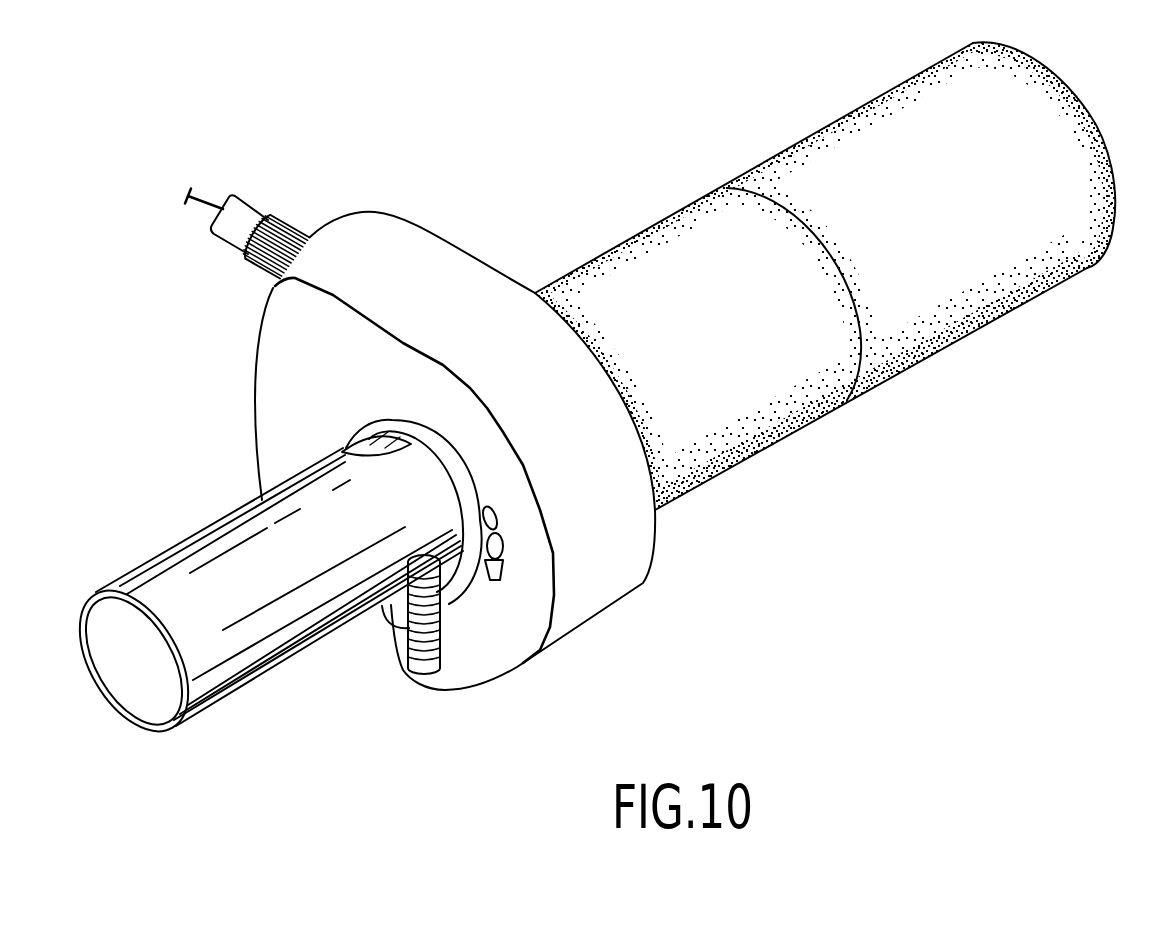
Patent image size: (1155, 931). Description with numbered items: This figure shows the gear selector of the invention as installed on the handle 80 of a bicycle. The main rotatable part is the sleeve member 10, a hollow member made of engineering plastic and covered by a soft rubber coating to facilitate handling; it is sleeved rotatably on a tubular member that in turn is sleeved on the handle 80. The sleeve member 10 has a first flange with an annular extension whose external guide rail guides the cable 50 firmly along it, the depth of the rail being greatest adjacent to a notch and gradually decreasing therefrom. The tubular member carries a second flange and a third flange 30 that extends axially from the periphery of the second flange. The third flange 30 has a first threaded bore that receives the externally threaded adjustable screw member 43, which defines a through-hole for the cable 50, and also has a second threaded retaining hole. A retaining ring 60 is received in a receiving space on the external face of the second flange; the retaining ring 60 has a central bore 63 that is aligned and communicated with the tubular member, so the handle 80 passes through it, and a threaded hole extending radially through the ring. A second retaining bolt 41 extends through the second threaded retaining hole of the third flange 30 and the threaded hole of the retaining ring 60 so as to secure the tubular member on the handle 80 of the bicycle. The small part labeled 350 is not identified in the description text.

The sleeve member 10 is at (650, 223).
The third flange 30 is at (247, 362).
The second retaining bolt 41 is at (430, 668).
The adjustable screw member 43 is at (307, 218).
The cable 50 is at (212, 200).
The retaining ring 60 is at (467, 582).
The central bore 63 is at (343, 450).
The handle 80 is at (183, 543).
The latch 350 is at (498, 575).